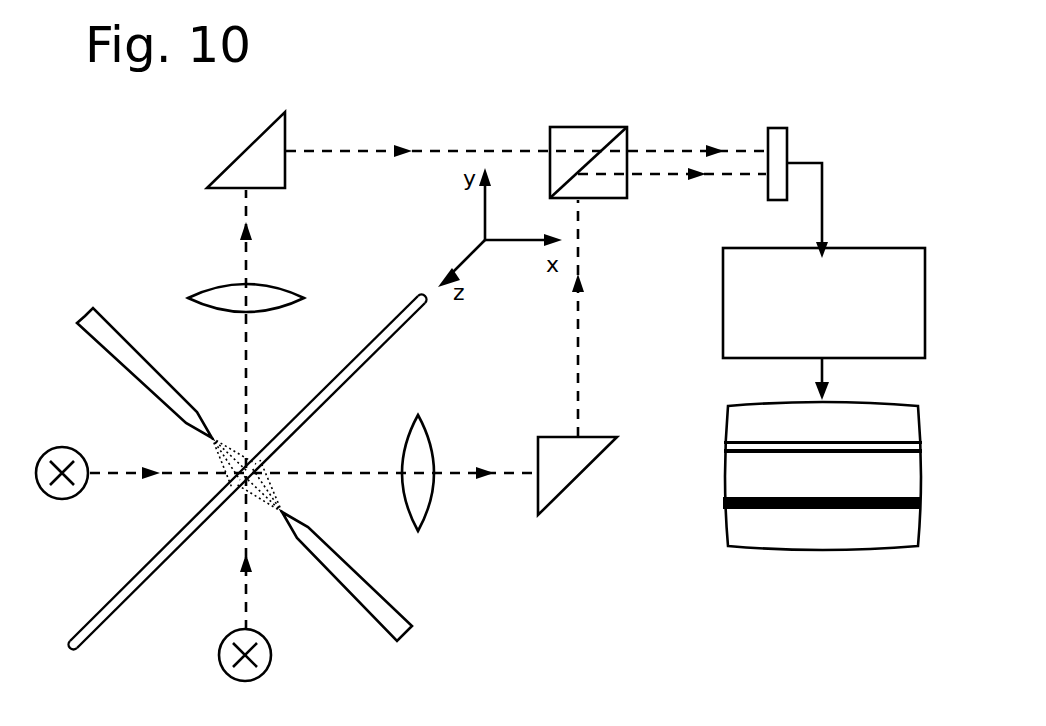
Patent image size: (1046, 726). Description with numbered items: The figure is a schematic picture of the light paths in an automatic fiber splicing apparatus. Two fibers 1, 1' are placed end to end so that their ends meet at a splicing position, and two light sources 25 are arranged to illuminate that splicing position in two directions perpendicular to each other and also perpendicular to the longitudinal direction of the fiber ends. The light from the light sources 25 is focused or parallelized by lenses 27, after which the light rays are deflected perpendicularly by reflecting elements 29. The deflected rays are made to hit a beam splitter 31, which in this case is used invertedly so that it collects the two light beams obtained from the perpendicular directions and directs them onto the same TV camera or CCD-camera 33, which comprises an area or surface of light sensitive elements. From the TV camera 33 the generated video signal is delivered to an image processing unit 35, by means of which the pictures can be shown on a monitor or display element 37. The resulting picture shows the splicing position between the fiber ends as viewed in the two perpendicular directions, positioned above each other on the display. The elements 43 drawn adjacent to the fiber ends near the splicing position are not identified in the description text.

The optical fiber 1 is at (161, 557).
The optical fiber (second portion) 1' is at (336, 384).
The light source 25 is at (56, 448).
The lens 27 is at (214, 288).
The prism / mirror 29 is at (283, 133).
The beam splitter 31 is at (604, 198).
The detector (CCD camera) 33 is at (788, 138).
The image processing unit 35 is at (872, 256).
The monitor / display 37 is at (734, 528).
The fiber holder / electrode 43 is at (142, 362).